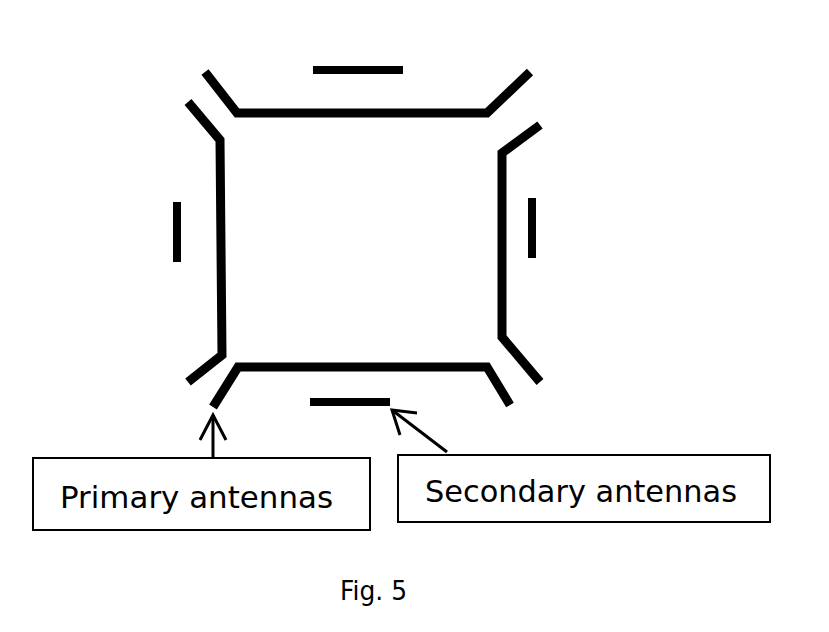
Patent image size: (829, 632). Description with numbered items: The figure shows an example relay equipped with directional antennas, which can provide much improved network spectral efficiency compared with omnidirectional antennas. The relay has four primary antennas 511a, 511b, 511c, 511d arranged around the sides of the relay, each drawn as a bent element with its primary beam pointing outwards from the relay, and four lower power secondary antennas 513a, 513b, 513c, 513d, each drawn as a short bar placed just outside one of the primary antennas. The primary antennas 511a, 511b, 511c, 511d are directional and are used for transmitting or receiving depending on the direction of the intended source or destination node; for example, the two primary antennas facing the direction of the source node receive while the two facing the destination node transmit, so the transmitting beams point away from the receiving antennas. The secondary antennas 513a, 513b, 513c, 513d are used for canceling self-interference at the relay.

The primary antenna 511a is at (433, 108).
The primary antenna 511b is at (505, 302).
The primary antenna 511c is at (295, 372).
The primary antenna 511d is at (217, 317).
The secondary antenna 513a is at (368, 62).
The secondary antenna 513b is at (537, 218).
The secondary antenna 513c is at (333, 408).
The secondary antenna 513d is at (172, 220).